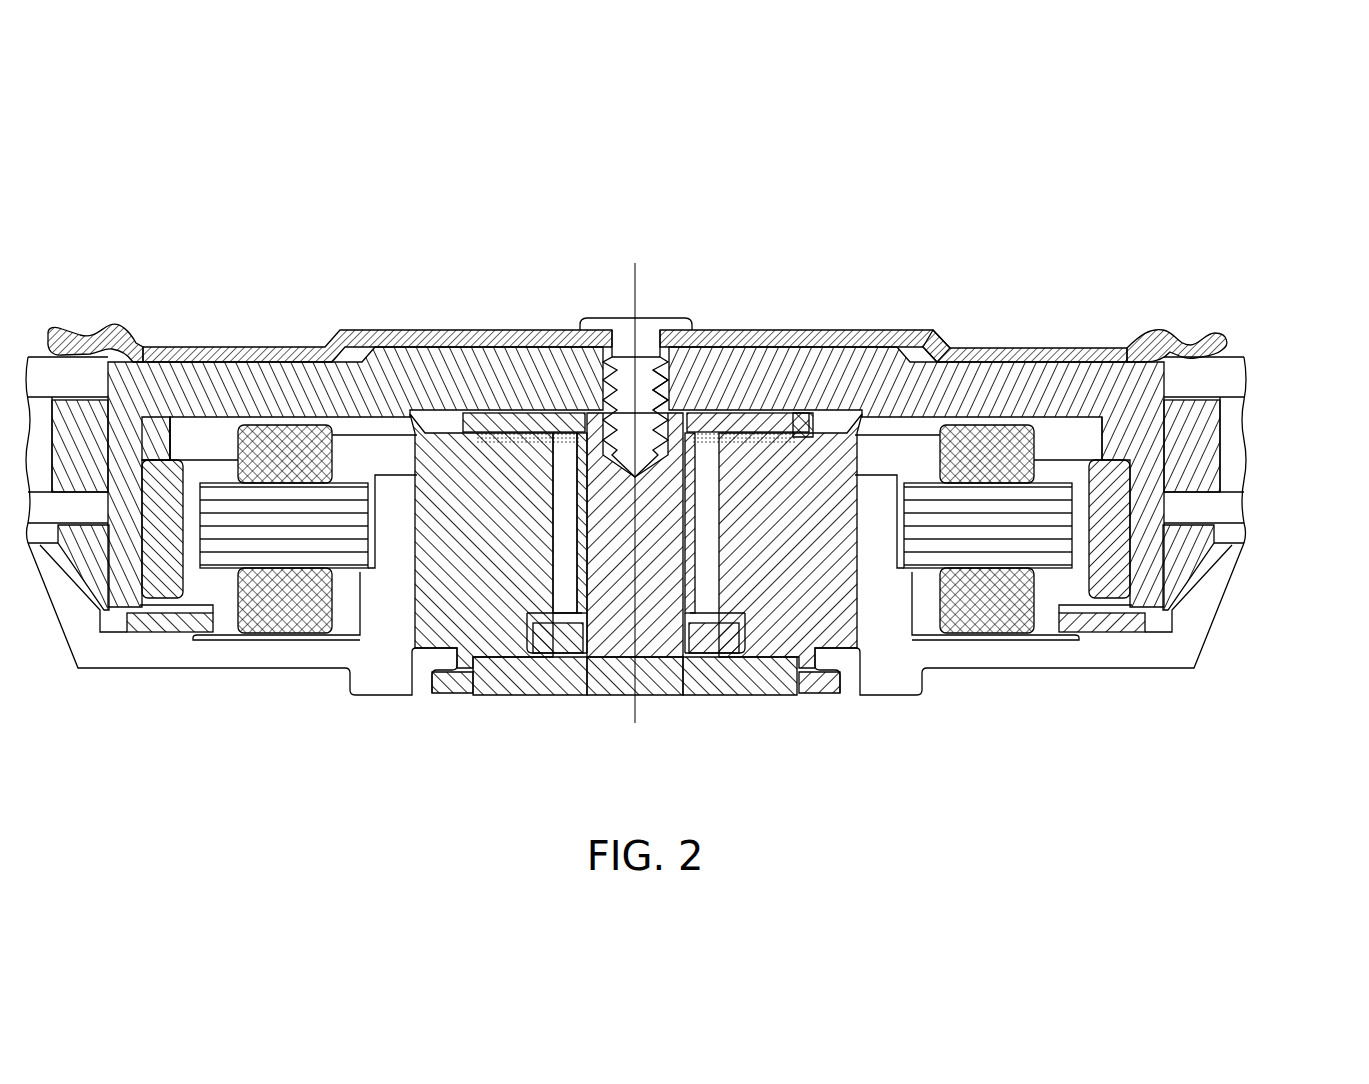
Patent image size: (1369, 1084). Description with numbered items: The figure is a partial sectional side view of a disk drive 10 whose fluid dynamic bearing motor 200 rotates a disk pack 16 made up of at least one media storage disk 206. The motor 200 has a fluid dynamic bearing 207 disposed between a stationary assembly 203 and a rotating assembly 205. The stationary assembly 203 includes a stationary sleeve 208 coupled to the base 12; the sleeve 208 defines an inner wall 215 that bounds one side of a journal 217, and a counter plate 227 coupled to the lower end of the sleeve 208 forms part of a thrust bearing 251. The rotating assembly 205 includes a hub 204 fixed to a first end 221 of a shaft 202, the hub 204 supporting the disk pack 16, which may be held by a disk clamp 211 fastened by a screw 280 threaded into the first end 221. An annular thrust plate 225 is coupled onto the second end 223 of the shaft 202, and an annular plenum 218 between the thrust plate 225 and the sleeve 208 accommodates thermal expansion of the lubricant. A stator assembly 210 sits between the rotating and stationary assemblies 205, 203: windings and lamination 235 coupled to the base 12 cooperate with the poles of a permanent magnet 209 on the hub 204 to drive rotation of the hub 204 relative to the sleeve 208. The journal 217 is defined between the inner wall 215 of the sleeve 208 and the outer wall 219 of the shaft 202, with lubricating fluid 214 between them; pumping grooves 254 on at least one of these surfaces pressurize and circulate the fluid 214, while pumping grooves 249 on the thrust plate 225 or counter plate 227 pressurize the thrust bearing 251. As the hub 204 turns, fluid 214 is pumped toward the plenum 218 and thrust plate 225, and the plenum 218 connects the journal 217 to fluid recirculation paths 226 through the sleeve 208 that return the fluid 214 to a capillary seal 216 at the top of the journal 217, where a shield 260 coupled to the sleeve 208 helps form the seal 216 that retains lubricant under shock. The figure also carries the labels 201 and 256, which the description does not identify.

The disk drive 10 is at (125, 248).
The base 12 is at (890, 695).
The disk pack 16 is at (1240, 345).
The fluid dynamic bearing motor 200 is at (222, 800).
The screw 201 is at (635, 265).
The shaft 202 is at (655, 400).
The stationary assembly 203 is at (1198, 627).
The hub 204 is at (1080, 380).
The rotating assembly 205 is at (1050, 325).
The media storage disk 206 is at (1185, 393).
The fluid dynamic bearing 207 is at (574, 540).
The stationary sleeve 208 is at (830, 625).
The permanent magnet 209 is at (1170, 633).
The stator assembly 210 is at (1105, 567).
The disk clamp 211 is at (935, 330).
The lubricating fluid 214 is at (690, 500).
The inner wall 215 is at (500, 400).
The capillary seal 216 is at (800, 447).
The journal 217 is at (400, 420).
The annular plenum 218 is at (793, 660).
The outer wall 219 is at (445, 430).
The first end 221 is at (565, 420).
The second end 223 is at (640, 660).
The annular thrust plate 225 is at (737, 660).
The fluid recirculation paths 226 is at (590, 600).
The counter plate 227 is at (503, 680).
The windings and lamination 235 is at (985, 553).
The pumping grooves 249 is at (570, 660).
The thrust bearing 251 is at (667, 675).
The pumping grooves 254 is at (787, 453).
The cup 256 is at (595, 633).
The shield 260 is at (723, 415).
The screw 280 is at (597, 347).